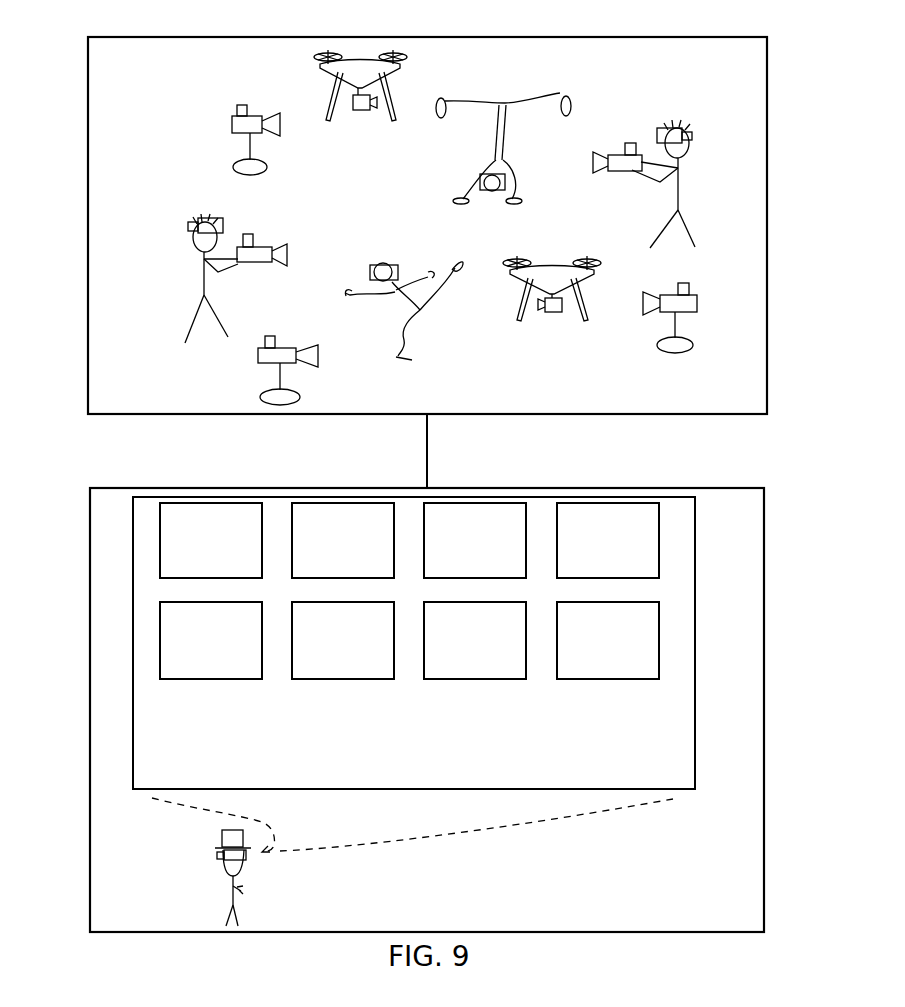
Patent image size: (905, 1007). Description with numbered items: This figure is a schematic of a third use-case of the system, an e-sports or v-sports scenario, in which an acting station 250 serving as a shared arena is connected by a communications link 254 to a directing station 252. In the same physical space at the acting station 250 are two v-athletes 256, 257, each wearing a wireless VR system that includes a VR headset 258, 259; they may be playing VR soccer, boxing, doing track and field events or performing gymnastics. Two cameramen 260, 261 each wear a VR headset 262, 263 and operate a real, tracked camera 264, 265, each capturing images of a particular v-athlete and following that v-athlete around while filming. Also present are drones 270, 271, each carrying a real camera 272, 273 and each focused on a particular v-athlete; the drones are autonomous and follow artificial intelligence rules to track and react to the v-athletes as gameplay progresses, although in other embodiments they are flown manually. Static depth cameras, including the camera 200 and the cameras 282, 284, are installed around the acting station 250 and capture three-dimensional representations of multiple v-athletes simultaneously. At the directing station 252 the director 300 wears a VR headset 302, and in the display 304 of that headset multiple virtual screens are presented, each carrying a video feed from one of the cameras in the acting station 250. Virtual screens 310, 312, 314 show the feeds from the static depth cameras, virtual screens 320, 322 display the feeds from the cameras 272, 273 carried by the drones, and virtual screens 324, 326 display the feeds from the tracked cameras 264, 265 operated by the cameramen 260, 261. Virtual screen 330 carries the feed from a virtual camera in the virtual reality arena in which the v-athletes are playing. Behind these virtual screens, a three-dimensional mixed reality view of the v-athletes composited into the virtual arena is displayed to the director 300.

The static depth camera 200 is at (230, 129).
The acting station 250 is at (86, 210).
The directing station 252 is at (89, 505).
The communications link 254 is at (430, 456).
The v-athlete 256 is at (478, 103).
The v-athlete 257 is at (411, 353).
The VR headset 258 is at (492, 194).
The VR headset 259 is at (400, 265).
The cameraman 260 is at (680, 193).
The cameraman 261 is at (200, 278).
The VR headset 262 is at (692, 129).
The VR headset 263 is at (190, 226).
The tracked camera 264 is at (624, 171).
The tracked camera 265 is at (265, 248).
The drone 270 is at (392, 94).
The drone 271 is at (589, 301).
The camera 272 is at (356, 112).
The camera 273 is at (553, 314).
The static depth camera 282 is at (293, 350).
The static depth camera 284 is at (696, 298).
The director 300 is at (221, 840).
The VR headset 302 is at (249, 856).
The display 304 is at (697, 592).
The virtual screen 310 is at (205, 502).
The virtual screen 312 is at (338, 502).
The virtual screen 314 is at (478, 502).
The virtual screen 320 is at (220, 680).
The virtual screen 322 is at (350, 680).
The virtual screen 324 is at (483, 680).
The virtual screen 326 is at (615, 680).
The virtual screen 330 is at (607, 502).